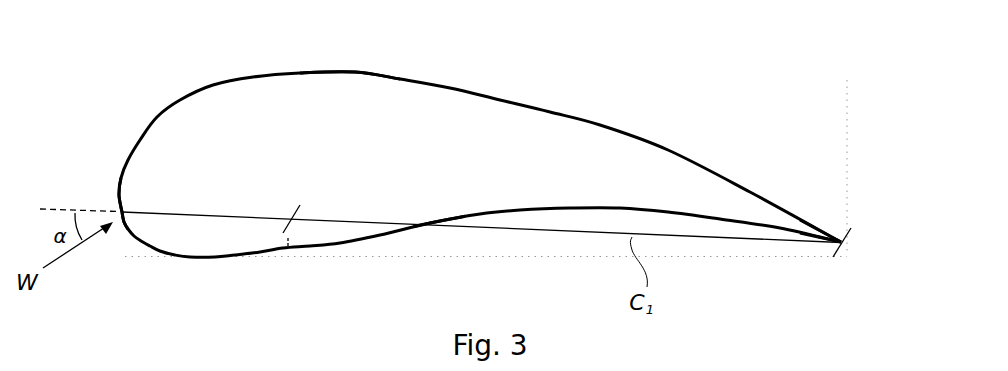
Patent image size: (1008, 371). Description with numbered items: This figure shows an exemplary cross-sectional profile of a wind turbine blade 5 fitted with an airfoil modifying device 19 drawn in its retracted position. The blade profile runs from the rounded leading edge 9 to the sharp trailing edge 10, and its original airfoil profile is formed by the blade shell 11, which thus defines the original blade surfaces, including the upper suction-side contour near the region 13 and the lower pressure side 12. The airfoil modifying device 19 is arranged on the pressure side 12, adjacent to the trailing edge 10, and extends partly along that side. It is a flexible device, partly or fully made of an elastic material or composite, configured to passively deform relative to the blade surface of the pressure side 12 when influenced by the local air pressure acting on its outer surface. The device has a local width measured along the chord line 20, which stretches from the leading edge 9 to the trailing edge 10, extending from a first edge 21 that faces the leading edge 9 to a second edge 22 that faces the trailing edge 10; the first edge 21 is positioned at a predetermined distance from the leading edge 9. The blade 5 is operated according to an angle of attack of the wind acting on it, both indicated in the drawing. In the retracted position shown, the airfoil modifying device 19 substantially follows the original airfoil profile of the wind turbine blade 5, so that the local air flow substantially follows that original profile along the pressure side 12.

The wind turbine blade 5 is at (464, 169).
The leading edge 9 is at (120, 211).
The trailing edge 10 is at (838, 236).
The blade shell 11 is at (628, 135).
The pressure side 12 is at (253, 255).
The suction side apex region 13 is at (355, 73).
The airfoil modifying device 19 is at (455, 232).
The chord line 20 is at (234, 215).
The first edge 21 is at (287, 255).
The second edge 22 is at (838, 248).